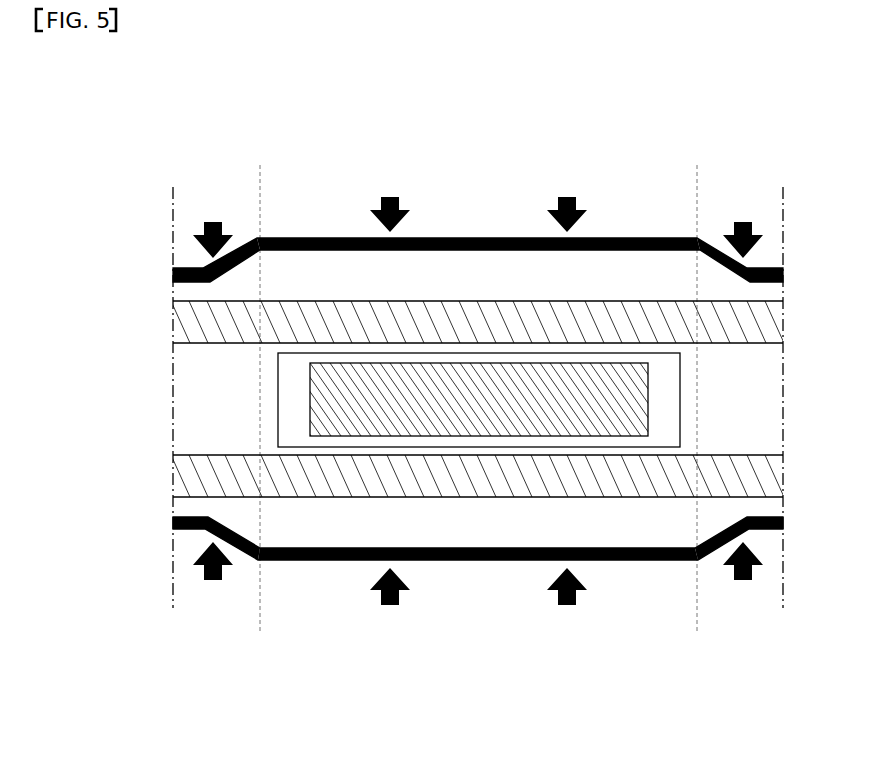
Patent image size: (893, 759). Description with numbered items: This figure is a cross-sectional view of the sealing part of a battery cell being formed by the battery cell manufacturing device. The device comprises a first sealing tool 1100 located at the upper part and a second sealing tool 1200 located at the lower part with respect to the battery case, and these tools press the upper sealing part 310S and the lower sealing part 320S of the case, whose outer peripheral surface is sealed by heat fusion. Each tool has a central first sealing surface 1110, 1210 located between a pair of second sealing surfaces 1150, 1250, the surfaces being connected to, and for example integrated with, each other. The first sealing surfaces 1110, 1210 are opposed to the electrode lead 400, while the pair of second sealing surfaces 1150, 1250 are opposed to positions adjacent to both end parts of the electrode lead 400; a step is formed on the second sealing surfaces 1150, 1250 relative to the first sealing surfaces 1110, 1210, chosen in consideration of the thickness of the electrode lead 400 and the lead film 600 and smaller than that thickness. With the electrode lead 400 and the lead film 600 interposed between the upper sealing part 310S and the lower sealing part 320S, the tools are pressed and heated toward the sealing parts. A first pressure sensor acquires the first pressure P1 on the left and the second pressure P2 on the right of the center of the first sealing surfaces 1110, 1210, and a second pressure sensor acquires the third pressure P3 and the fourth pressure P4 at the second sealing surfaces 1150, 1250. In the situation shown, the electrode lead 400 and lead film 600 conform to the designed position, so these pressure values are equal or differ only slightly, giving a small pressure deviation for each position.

The first sealing tool 1100 is at (478, 171).
The first sealing surface 1110 is at (495, 240).
The second sealing surfaces 1150 is at (712, 247).
The second sealing tool 1200 is at (478, 625).
The first sealing surface 1210 is at (497, 555).
The second sealing surfaces 1250 is at (710, 556).
The upper sealing part 310S is at (633, 323).
The lower sealing part 320S is at (630, 480).
The lead film 600 is at (294, 378).
The electrode lead 400 is at (435, 388).
The first pressure P1 is at (390, 402).
The second pressure P2 is at (567, 402).
The third pressure P3 is at (212, 398).
The fourth pressure P4 is at (743, 399).